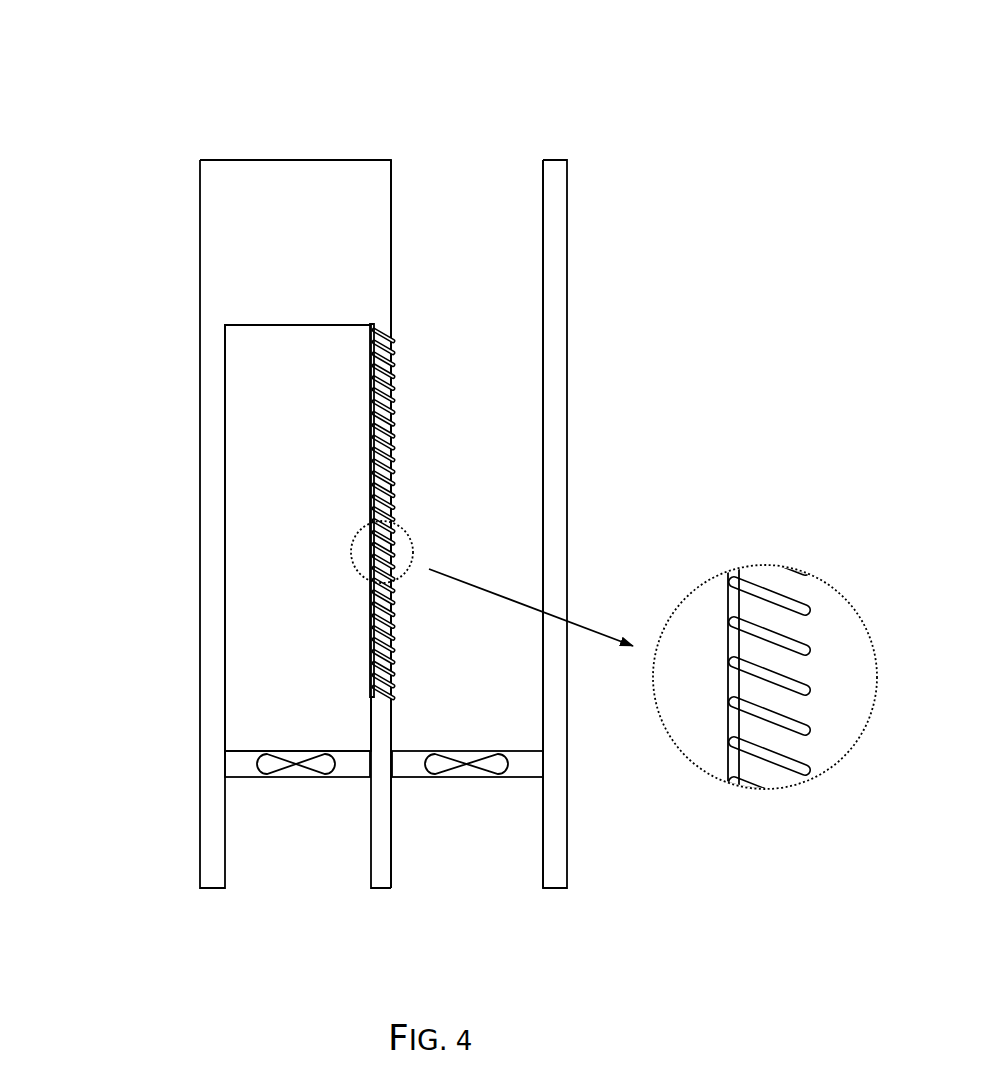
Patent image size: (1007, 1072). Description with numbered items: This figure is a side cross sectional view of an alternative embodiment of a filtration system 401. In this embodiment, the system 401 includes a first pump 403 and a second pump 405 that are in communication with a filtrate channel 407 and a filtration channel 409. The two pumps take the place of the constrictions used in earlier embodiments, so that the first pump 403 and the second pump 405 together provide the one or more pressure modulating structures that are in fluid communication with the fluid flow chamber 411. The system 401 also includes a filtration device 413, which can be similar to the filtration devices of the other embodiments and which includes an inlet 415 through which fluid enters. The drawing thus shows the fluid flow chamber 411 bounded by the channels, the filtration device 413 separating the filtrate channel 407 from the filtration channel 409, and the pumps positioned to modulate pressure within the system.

The filtration system 401 is at (119, 71).
The first pump 403 is at (343, 778).
The second pump 405 is at (528, 778).
The filtrate channel 407 is at (256, 452).
The filtration channel 409 is at (521, 445).
The fluid flow chamber 411 is at (200, 268).
The filtration device 413 is at (357, 429).
The inlet 415 is at (463, 161).